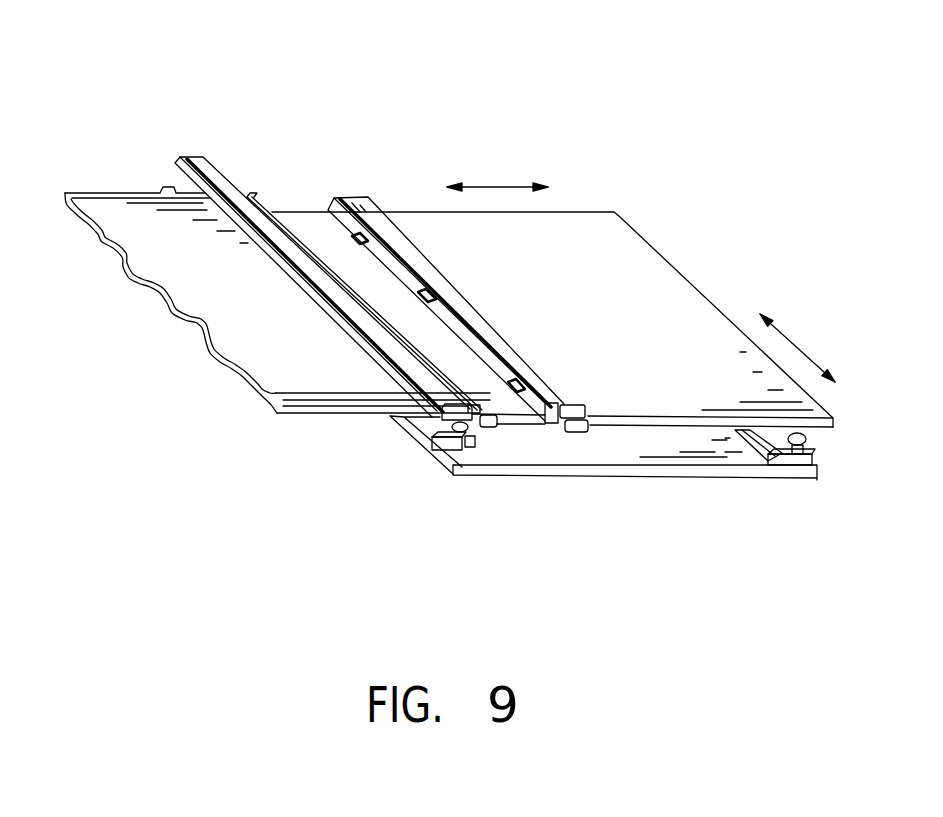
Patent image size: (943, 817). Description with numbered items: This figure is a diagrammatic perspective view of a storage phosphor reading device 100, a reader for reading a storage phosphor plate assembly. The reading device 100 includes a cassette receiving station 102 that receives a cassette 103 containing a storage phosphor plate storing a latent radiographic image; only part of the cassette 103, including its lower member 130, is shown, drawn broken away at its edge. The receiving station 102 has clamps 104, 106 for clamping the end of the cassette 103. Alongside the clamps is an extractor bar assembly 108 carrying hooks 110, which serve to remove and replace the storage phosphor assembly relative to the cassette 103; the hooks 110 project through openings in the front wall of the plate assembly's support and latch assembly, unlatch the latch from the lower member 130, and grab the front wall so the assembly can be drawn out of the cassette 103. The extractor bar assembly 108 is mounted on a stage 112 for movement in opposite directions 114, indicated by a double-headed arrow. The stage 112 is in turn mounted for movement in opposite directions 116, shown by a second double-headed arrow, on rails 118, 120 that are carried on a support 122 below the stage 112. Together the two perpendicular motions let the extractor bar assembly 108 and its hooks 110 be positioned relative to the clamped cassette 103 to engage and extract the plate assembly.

The storage phosphor reading device 100 is at (484, 56).
The cassette receiving station 102 is at (328, 270).
The cassette 103 is at (262, 277).
The clamp 104 is at (420, 428).
The clamp 106 is at (337, 318).
The extractor bar assembly 108 is at (458, 314).
The hooks 110 is at (421, 295).
The stage 112 is at (706, 297).
The opposite directions 114 is at (497, 186).
The opposite directions 116 is at (797, 343).
The rail 118 is at (792, 458).
The rail 120 is at (472, 430).
The support 122 is at (653, 474).
The lower member 130 is at (197, 322).